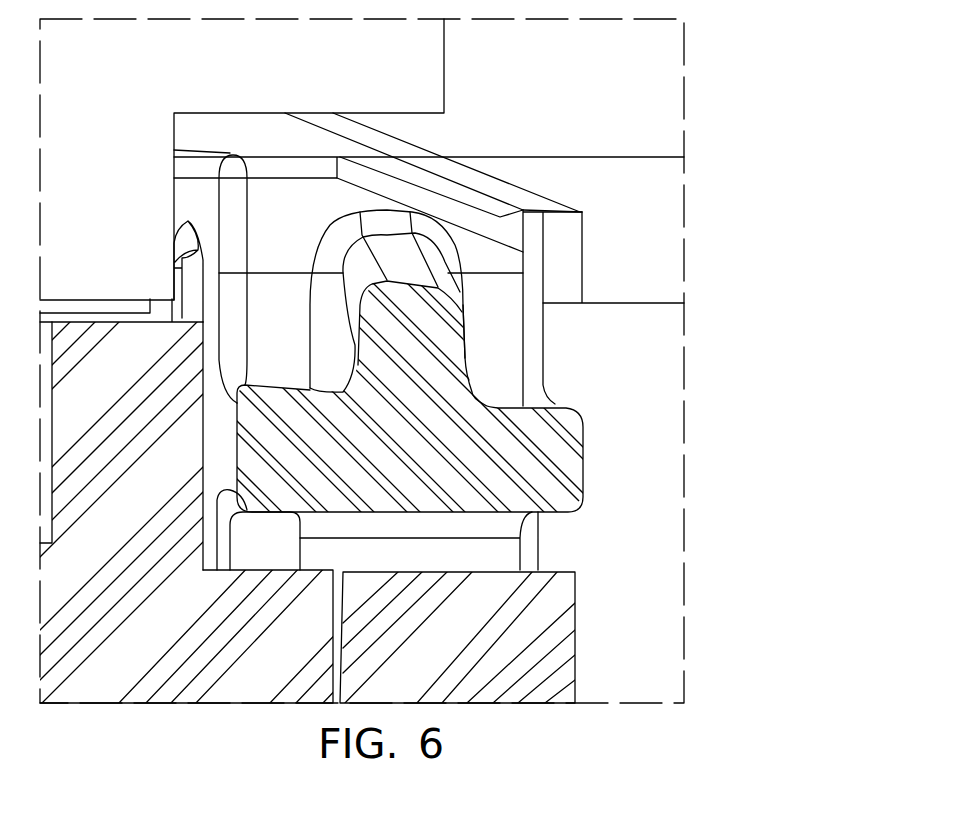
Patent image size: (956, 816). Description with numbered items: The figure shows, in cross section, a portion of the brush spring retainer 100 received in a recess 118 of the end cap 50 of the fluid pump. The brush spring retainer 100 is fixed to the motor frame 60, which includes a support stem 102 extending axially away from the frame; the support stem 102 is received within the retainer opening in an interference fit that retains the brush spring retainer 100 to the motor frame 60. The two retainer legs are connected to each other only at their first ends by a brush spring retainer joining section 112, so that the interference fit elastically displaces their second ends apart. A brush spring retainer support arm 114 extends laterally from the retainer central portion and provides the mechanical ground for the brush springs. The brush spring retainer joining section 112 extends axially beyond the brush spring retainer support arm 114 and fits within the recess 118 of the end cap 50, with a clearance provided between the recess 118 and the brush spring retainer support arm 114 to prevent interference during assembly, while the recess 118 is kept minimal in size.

The end cap 50 is at (652, 210).
The recess 118 is at (413, 158).
The brush spring retainer joining section 112 is at (480, 226).
The brush spring retainer 100 is at (577, 357).
The brush spring retainer support arm 114 is at (573, 462).
The motor frame 60 is at (533, 690).
The support stem 102 is at (457, 637).